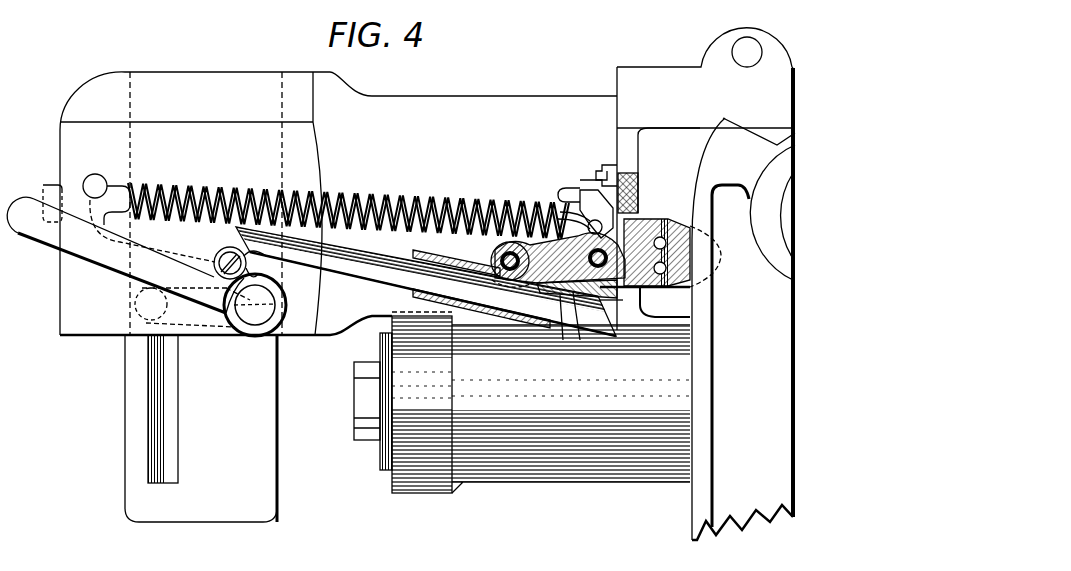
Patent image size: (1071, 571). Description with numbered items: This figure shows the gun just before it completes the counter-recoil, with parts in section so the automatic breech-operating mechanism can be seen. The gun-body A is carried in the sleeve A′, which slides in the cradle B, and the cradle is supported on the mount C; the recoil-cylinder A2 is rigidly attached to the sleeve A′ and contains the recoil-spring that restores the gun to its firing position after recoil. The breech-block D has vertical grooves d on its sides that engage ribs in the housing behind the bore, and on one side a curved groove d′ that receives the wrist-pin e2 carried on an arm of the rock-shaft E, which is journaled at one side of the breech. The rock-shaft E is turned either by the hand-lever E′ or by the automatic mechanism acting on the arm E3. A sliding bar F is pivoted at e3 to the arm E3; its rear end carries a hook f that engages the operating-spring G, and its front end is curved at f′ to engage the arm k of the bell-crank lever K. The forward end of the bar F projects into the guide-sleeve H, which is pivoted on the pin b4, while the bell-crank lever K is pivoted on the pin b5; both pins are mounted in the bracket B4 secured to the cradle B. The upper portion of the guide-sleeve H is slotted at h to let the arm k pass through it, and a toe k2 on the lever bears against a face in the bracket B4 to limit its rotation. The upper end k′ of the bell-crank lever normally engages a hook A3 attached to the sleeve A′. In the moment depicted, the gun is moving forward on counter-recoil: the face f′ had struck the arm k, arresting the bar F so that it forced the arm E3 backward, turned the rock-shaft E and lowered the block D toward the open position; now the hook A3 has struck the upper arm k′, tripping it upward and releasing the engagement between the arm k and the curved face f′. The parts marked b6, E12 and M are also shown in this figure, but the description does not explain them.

The gun-body A is at (338, 203).
The sleeve A′ is at (622, 152).
The recoil-cylinder A2 is at (522, 402).
The hook A3 is at (562, 188).
The cradle B is at (642, 186).
The frame or bracket B4 is at (650, 308).
The pin b4 is at (503, 247).
The pin b5 is at (620, 300).
The holes b6 is at (666, 255).
The mount C is at (753, 336).
The breech-block D is at (201, 428).
The vertical grooves d is at (157, 436).
The curved groove d′ is at (237, 327).
The rock-shaft E is at (256, 316).
The hand-lever E′ is at (68, 238).
The arm E3 is at (232, 247).
The hidden lever arm E12 is at (204, 328).
The wrist-pin e2 is at (140, 322).
The pivot e3 is at (214, 264).
The sliding bar F is at (334, 270).
The hook f is at (94, 178).
The curved end f′ is at (563, 340).
The operating-spring G is at (418, 208).
The guide-sleeve H is at (463, 272).
The slot h is at (580, 340).
The bell-crank lever K is at (573, 233).
The arm k is at (540, 282).
The upper end k′ is at (592, 214).
The toe k2 is at (645, 292).
The pin M is at (48, 186).